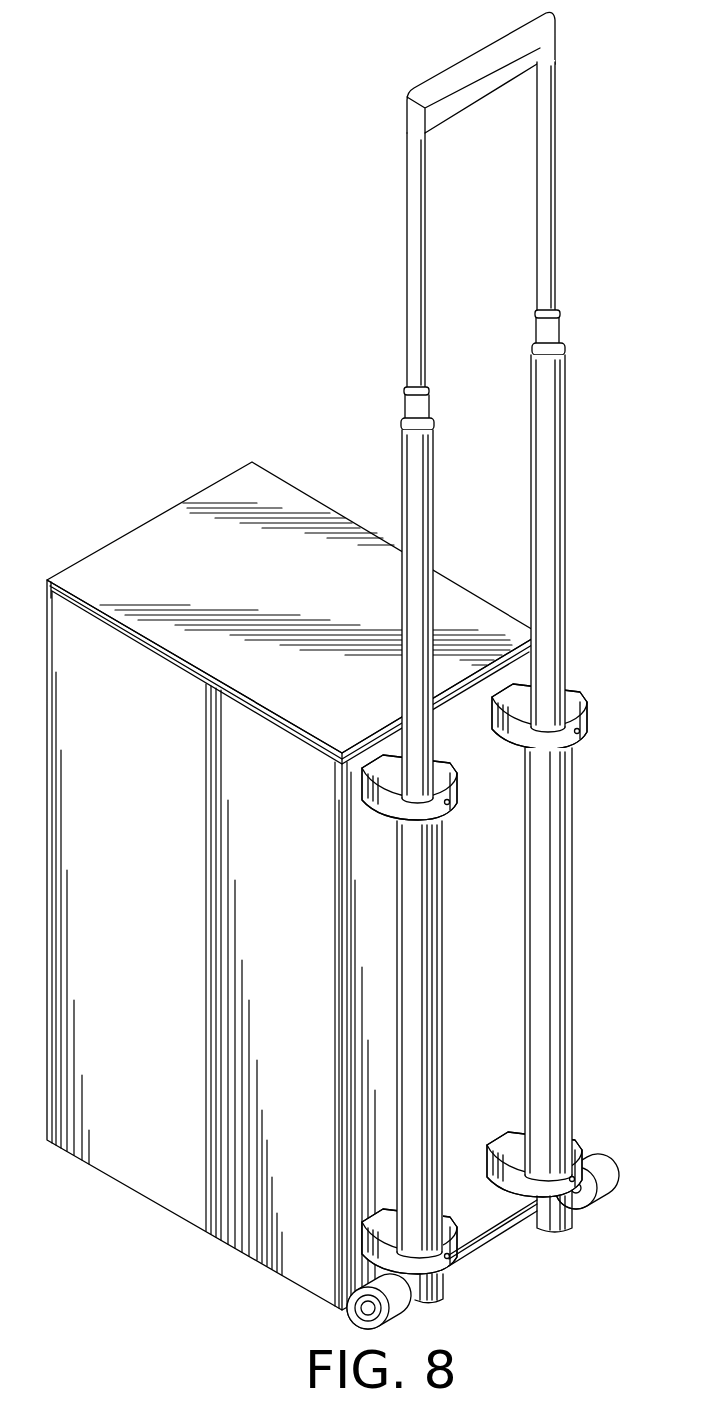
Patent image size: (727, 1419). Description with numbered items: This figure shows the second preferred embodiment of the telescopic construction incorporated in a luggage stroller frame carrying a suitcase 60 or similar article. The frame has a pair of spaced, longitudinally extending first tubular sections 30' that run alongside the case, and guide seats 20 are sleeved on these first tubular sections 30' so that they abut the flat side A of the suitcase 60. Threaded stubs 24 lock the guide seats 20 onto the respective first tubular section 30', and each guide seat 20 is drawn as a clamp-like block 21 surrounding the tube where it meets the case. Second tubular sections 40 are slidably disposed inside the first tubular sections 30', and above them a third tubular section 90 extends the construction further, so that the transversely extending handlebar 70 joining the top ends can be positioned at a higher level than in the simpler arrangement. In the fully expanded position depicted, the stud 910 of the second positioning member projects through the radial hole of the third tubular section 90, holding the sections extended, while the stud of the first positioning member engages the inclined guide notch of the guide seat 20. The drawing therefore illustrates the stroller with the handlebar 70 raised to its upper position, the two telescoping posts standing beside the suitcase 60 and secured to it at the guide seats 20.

The handlebar 70 is at (439, 82).
The third tubular section 90 is at (548, 184).
The stud 910 is at (548, 334).
The second tubular section 40 is at (550, 498).
The guide seat 20 is at (558, 690).
The bracket 21 is at (572, 692).
The threaded stub 24 is at (574, 750).
The first tubular section 30' is at (575, 990).
The suitcase 60 is at (341, 532).
The flat side A is at (362, 892).